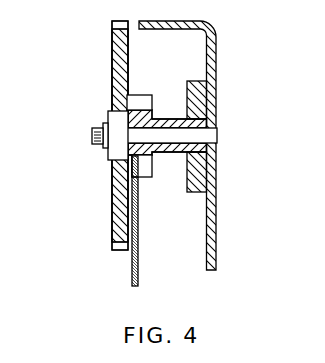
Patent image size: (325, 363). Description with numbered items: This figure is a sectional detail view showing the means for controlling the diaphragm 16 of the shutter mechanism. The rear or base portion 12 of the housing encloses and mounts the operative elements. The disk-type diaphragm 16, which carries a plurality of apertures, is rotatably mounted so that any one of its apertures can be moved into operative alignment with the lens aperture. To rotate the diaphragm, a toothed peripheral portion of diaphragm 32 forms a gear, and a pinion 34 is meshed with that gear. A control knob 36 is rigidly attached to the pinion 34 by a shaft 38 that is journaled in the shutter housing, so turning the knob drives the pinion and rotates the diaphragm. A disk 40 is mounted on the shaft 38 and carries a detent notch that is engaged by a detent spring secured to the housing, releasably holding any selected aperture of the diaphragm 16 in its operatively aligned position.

The rear or base portion 12 is at (217, 230).
The disk-type diaphragm 16 is at (133, 268).
The toothed peripheral portion of diaphragm 32 is at (115, 170).
The pinion 34 is at (143, 172).
The control knob 36 is at (117, 61).
The shaft 38 is at (170, 119).
The disk 40 is at (201, 93).